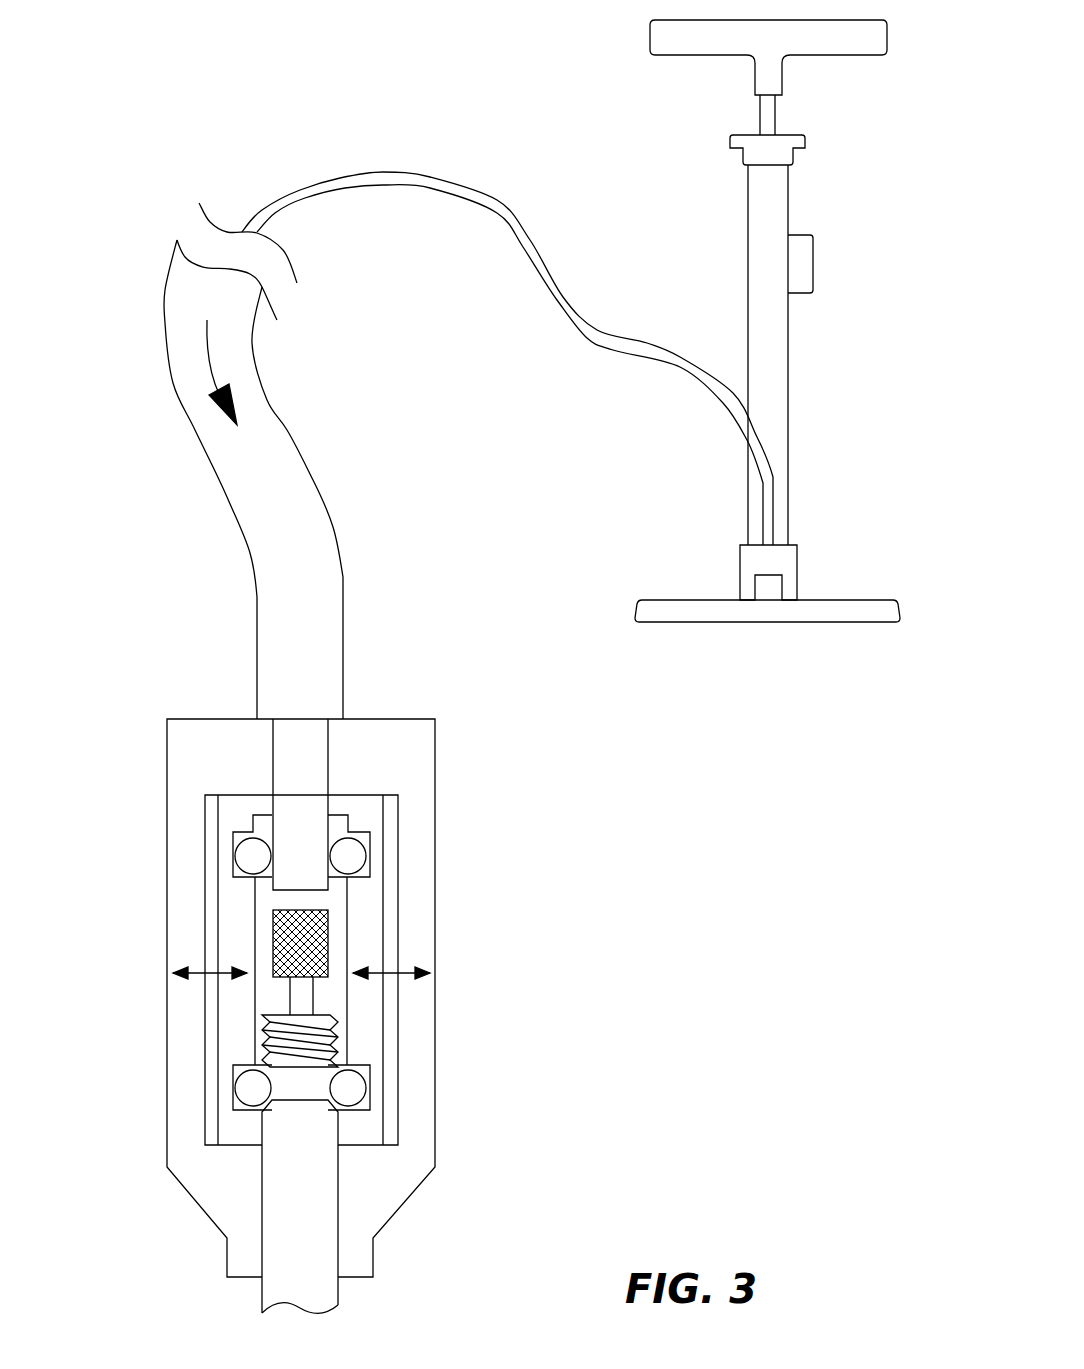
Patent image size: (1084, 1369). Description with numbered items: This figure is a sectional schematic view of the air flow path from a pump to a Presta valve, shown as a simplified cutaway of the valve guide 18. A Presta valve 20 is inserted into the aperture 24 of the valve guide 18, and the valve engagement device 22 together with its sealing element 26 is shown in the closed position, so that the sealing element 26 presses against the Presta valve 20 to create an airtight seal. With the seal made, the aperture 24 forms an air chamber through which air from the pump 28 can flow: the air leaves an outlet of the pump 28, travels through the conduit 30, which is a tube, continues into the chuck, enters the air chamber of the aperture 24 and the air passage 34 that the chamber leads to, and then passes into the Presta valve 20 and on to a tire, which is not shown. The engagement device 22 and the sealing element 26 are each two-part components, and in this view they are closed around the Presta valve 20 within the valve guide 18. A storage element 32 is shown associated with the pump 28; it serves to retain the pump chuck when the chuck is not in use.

The valve guide 18 is at (378, 1210).
The Presta valve 20 is at (289, 1175).
The valve engagement device 22 is at (233, 926).
The aperture 24 is at (333, 900).
The sealing element 26 is at (252, 858).
The pump 28 is at (743, 162).
The conduit 30 is at (345, 577).
The storage element 32 is at (813, 257).
The air passage 34 is at (289, 865).